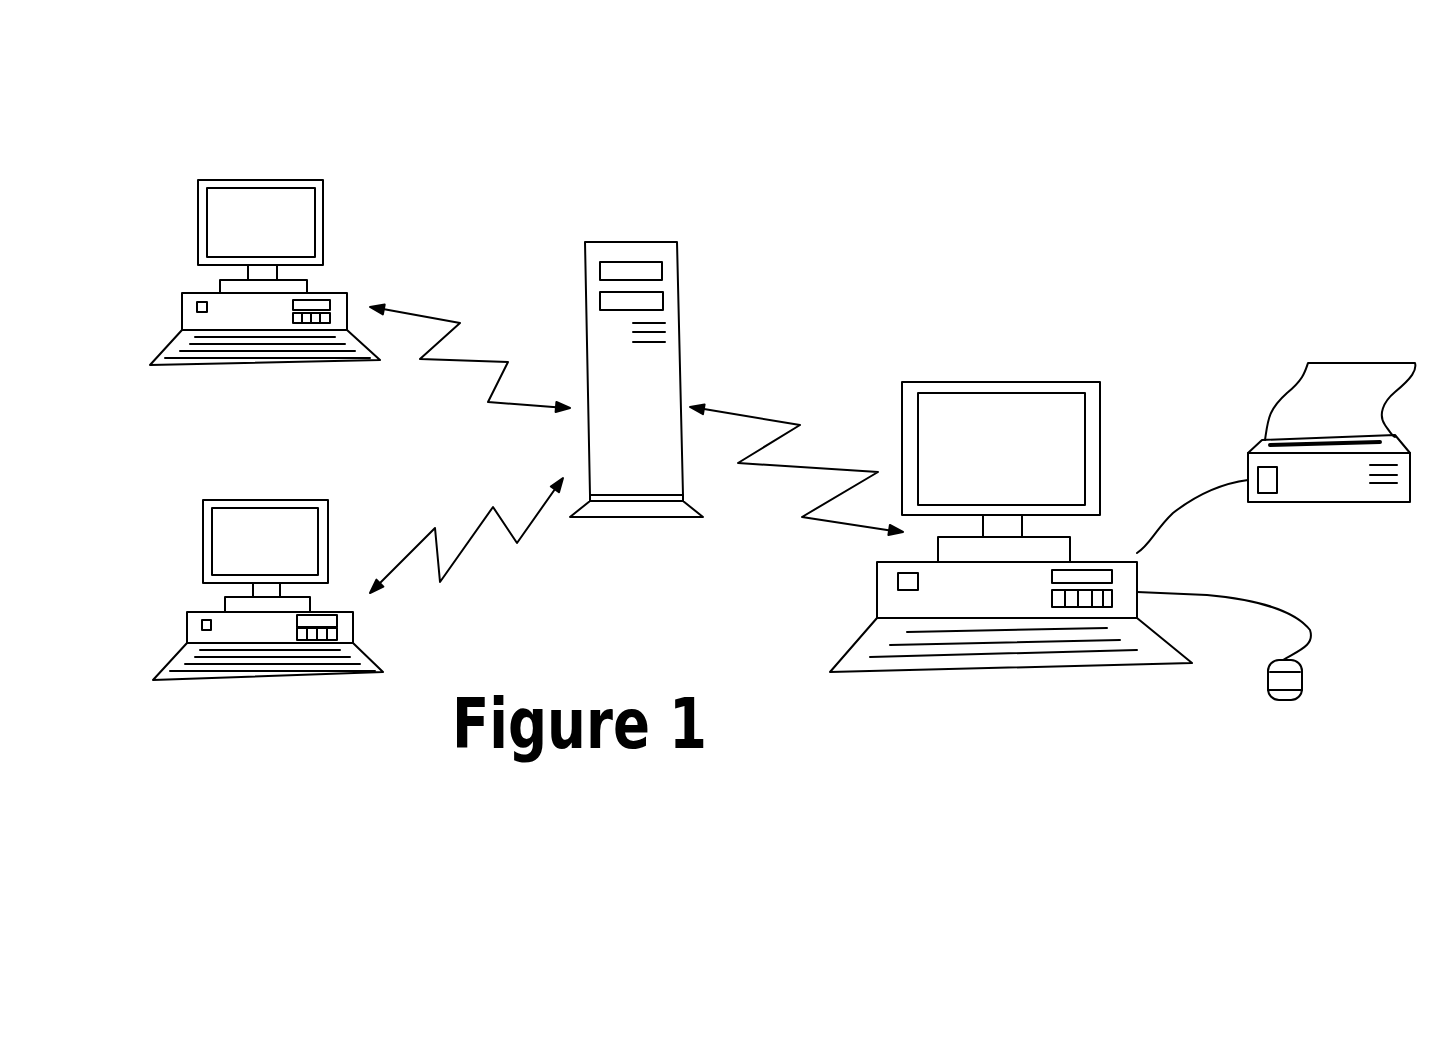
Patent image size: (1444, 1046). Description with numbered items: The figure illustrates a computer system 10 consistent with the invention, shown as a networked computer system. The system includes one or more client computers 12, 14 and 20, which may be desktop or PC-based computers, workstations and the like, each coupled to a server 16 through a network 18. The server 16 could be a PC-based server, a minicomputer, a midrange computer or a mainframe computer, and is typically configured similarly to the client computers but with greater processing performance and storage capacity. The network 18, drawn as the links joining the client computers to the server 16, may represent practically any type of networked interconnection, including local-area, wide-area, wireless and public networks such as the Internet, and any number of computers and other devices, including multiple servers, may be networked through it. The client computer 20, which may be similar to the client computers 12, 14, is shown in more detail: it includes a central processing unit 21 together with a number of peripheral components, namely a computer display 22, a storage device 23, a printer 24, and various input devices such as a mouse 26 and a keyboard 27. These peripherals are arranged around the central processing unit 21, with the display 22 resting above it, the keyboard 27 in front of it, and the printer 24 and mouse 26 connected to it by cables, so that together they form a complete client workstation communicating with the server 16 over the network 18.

The computer system 10 is at (882, 247).
The client computer 12 is at (198, 210).
The client computer 14 is at (203, 505).
The server 16 is at (612, 242).
The network 18 is at (482, 363).
The client computer 20 is at (1085, 373).
The central processing unit 21 is at (890, 602).
The computer display 22 is at (957, 387).
The storage device 23 is at (1077, 606).
The printer 24 is at (1270, 447).
The mouse 26 is at (1293, 683).
The keyboard 27 is at (858, 665).